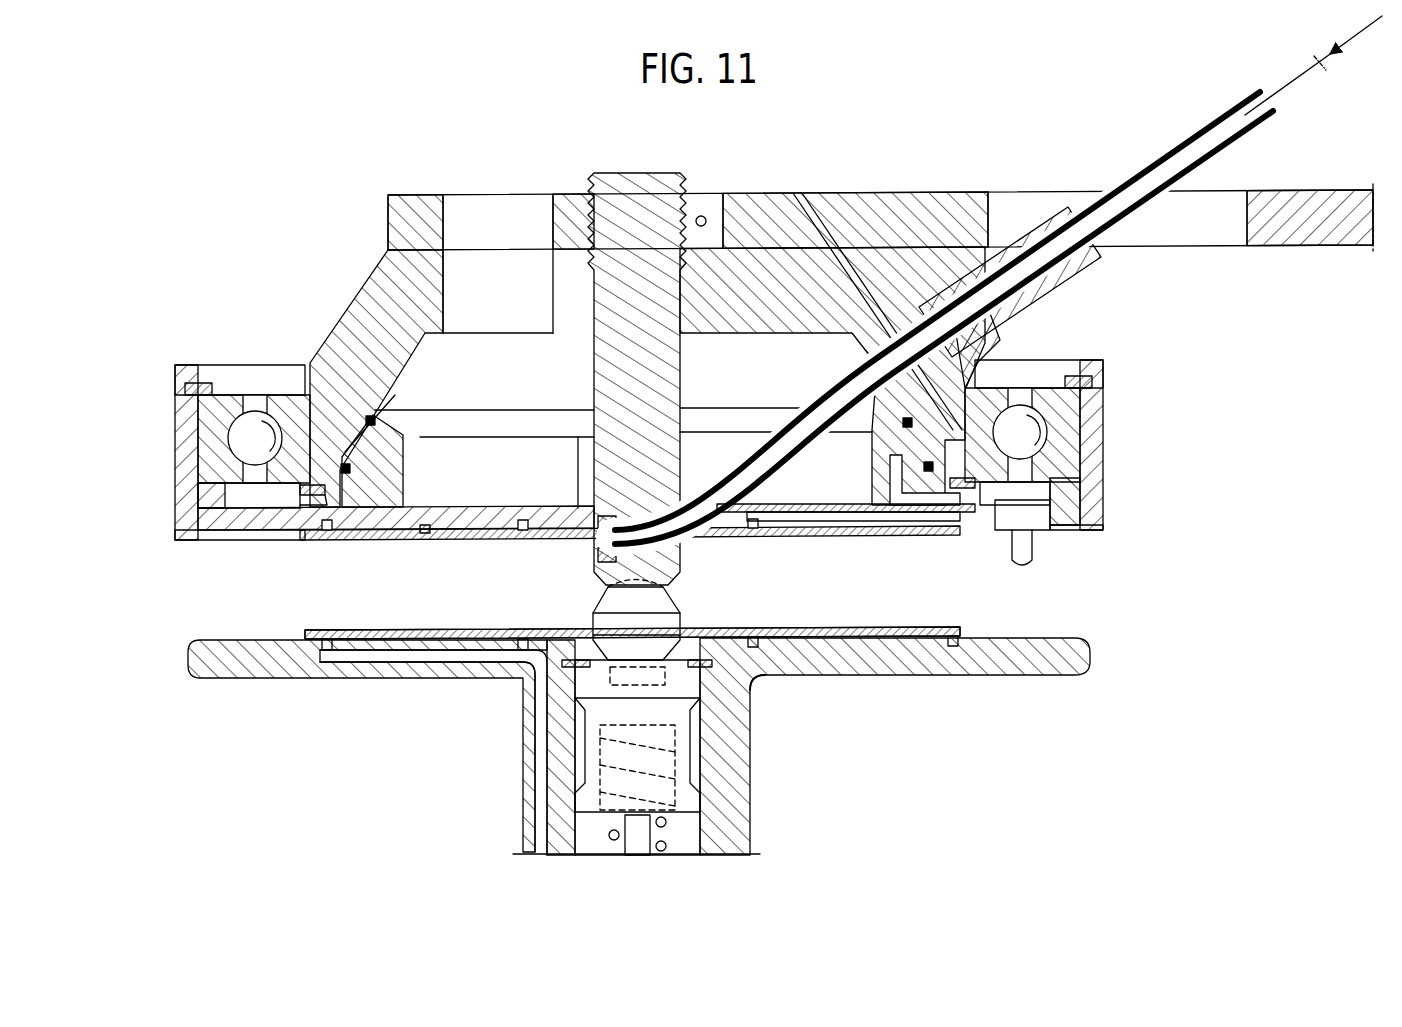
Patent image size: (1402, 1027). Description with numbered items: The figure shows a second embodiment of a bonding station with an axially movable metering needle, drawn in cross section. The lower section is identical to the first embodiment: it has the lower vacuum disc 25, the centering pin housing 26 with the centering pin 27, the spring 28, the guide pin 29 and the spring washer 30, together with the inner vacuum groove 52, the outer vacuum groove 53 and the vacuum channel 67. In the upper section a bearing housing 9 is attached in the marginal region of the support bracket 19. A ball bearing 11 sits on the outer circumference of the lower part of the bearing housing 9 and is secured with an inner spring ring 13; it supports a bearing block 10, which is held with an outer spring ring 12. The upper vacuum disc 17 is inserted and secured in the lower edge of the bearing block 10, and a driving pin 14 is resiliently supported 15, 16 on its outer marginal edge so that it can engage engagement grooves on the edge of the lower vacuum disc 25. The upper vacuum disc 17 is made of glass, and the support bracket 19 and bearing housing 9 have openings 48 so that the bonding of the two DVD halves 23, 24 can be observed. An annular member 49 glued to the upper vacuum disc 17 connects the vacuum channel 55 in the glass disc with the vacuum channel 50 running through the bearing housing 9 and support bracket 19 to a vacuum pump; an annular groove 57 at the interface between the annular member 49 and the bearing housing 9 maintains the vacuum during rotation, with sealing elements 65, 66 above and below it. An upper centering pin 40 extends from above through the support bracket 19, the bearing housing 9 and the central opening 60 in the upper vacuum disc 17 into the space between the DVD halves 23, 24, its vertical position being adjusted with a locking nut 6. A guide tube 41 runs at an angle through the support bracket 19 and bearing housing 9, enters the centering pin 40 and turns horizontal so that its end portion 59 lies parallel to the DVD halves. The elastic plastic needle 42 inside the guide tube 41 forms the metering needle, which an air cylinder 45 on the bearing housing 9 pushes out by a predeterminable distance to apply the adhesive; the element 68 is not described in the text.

The locking nut 6 is at (568, 205).
The bearing housing 9 is at (355, 313).
The bearing block 10 is at (1097, 458).
The ball bearing 11 is at (235, 432).
The outer spring ring 12 is at (190, 388).
The inner spring ring 13 is at (300, 500).
The driving pin 14 is at (1025, 568).
The resilient support 15 is at (1054, 536).
The resilient support 16 is at (1045, 533).
The upper vacuum disc 17 is at (462, 512).
The support bracket 19 is at (925, 212).
The DVD half 23 is at (383, 532).
The DVD half 24 is at (405, 636).
The lower vacuum disc 25 is at (335, 680).
The centering pin housing 26 is at (730, 720).
The centering pin 27 is at (665, 606).
The spring 28 is at (700, 758).
The guide pin 29 is at (665, 828).
The spring washer 30 is at (752, 688).
The upper centering pin 40 is at (640, 185).
The guide tube 41 is at (1212, 120).
The elastic plastic needle 42 is at (1300, 80).
The air cylinder 45 is at (1048, 208).
The openings 48 is at (498, 212).
The annular member 49 is at (428, 440).
The vacuum channel 50 is at (818, 212).
The inner vacuum groove 52 is at (523, 536).
The outer vacuum groove 53 is at (330, 538).
The vacuum channel 55 is at (833, 518).
The annular groove 57 is at (990, 372).
The end portion 59 is at (598, 552).
The central opening 60 is at (576, 506).
The sealing element 65 is at (860, 380).
The sealing element 66 is at (918, 522).
The vacuum channel 67 is at (462, 680).
The angle piece 68 is at (890, 470).